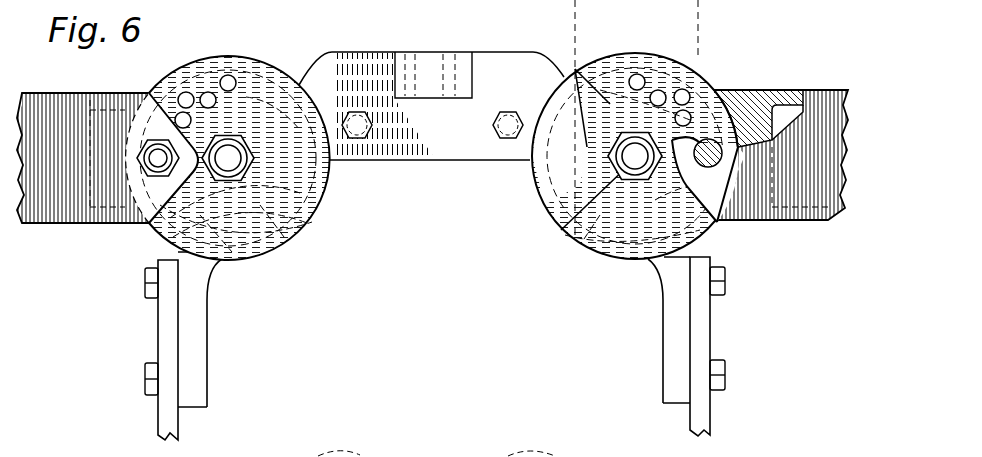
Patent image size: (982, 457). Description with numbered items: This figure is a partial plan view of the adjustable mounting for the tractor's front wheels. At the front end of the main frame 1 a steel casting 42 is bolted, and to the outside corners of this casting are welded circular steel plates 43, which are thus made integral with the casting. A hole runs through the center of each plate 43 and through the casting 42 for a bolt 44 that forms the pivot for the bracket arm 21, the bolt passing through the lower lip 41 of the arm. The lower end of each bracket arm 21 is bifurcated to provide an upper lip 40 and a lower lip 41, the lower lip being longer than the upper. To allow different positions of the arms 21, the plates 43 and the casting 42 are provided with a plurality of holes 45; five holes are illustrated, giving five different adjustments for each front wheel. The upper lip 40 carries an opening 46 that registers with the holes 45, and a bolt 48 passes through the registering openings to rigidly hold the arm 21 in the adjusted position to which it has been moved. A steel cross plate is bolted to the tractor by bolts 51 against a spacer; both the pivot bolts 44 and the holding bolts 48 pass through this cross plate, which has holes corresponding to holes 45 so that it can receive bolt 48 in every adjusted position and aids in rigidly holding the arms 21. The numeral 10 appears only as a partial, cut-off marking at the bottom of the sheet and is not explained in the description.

The main frame 1 is at (157, 417).
The bracket arm 21 is at (48, 228).
The upper lip 40 is at (232, 168).
The lower lip 41 is at (240, 210).
The steel casting 42 is at (420, 161).
The circular steel plates 43 is at (317, 218).
The bolts 44 is at (310, 230).
The holes 45 is at (184, 112).
The opening 46 is at (713, 163).
The bolt 48 is at (152, 170).
The bolts 51 is at (360, 140).
The frame 10 is at (436, 450).